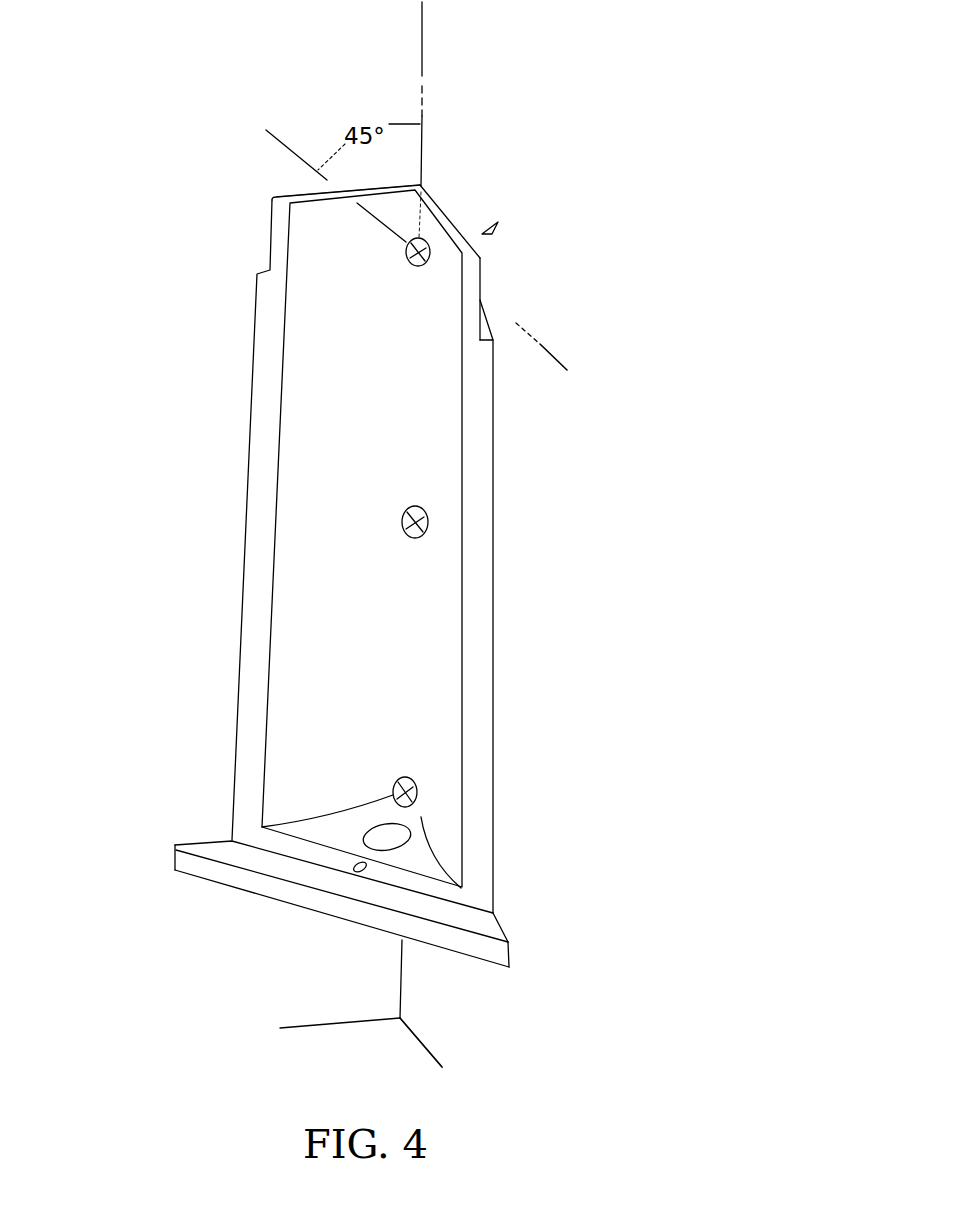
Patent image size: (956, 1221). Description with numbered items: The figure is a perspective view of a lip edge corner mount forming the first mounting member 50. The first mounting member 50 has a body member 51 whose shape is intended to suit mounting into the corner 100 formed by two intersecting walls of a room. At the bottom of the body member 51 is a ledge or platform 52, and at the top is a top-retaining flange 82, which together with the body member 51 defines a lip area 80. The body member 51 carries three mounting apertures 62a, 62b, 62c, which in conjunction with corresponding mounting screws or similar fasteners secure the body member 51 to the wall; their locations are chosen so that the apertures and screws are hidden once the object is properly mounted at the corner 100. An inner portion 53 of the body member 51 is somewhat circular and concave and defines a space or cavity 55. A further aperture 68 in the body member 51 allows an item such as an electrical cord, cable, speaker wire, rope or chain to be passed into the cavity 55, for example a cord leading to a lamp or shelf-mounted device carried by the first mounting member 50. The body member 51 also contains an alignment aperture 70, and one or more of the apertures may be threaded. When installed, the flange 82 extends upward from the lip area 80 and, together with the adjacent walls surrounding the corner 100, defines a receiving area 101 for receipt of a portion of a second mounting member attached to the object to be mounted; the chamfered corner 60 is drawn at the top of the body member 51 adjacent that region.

The first mounting member 50 is at (122, 422).
The body member 51 is at (500, 632).
The ledge or platform 52 is at (210, 843).
The inner portion 53 is at (340, 638).
The space or cavity 55 is at (403, 692).
The chamfered corner 60 is at (425, 275).
The mounting aperture 62a is at (406, 247).
The mounting aperture 62b is at (428, 517).
The mounting aperture 62c is at (397, 782).
The aperture 68 is at (412, 833).
The alignment aperture 70 is at (357, 872).
The lip area 80 is at (484, 333).
The top-retaining flange 82 is at (300, 196).
The corner 100 is at (422, 76).
The receiving area 101 is at (486, 232).